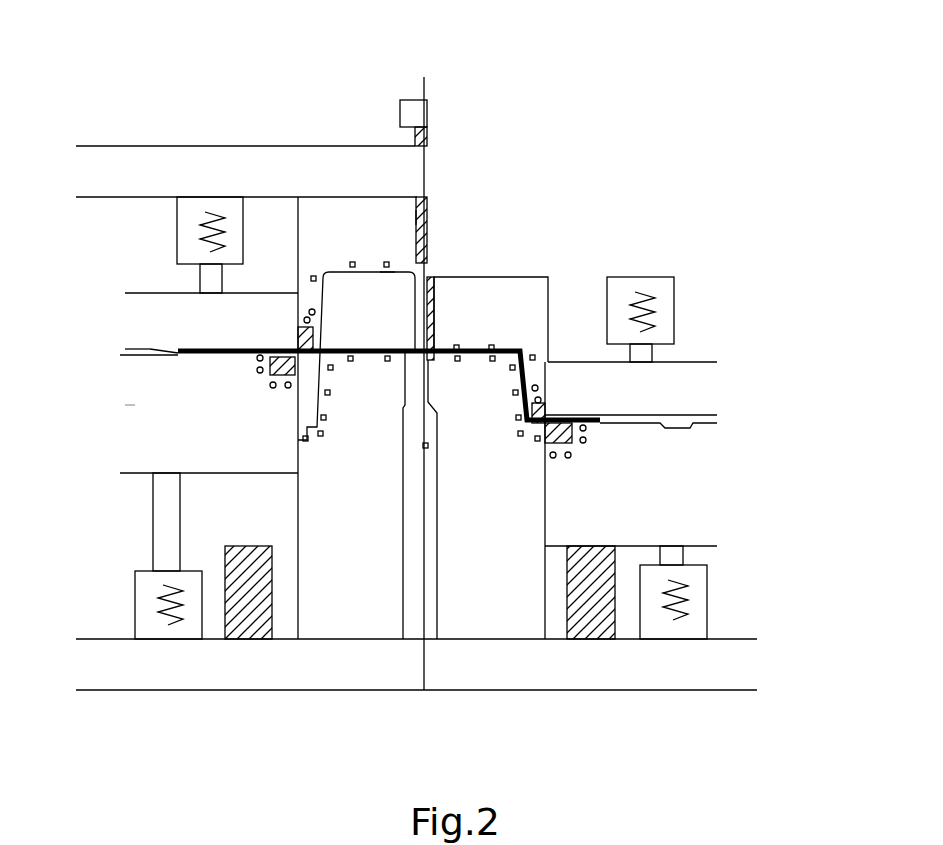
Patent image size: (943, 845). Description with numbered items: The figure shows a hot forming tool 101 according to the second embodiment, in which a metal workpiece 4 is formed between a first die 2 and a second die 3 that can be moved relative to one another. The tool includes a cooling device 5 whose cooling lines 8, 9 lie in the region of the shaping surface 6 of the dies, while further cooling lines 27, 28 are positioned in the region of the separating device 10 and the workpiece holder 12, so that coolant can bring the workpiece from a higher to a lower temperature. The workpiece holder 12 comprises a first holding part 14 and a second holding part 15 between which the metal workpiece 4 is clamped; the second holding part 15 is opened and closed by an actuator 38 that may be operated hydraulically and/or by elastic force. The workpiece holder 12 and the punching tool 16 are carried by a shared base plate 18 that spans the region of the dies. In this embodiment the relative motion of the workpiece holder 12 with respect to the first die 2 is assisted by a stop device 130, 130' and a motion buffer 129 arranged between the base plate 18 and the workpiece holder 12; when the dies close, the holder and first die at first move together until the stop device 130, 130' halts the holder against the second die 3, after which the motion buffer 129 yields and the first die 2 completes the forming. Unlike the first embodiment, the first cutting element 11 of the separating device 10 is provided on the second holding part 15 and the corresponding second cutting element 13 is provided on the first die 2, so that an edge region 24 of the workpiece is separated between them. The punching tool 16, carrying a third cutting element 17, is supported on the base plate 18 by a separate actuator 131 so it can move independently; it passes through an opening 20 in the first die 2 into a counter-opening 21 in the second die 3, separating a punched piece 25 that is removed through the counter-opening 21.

The hot forming tool 101 is at (160, 53).
The base plate 18 is at (113, 163).
The actuator 131 is at (413, 108).
The punching tool 16 is at (385, 138).
The third cutting element 17 is at (415, 210).
The opening 20 is at (413, 217).
The first die 2 is at (312, 205).
The cooling device 5 is at (330, 262).
The motion buffer 129 is at (158, 243).
The separating device 10 is at (190, 332).
The first holding part 14 is at (133, 349).
The workpiece holder 12 is at (115, 358).
The metal workpiece 4 is at (350, 347).
The second cutting element 13 is at (300, 338).
The first cutting element 11 is at (260, 375).
The cooling line 28 is at (258, 360).
The cooling line 27 is at (307, 303).
The cooling line 8 is at (387, 262).
The shaping surface 6 is at (383, 278).
The cooling line 9 is at (350, 364).
The counter-opening 21 is at (407, 406).
The punched piece 25 is at (427, 450).
The edge region 24 is at (598, 423).
The second holding part 15 is at (130, 405).
The second die 3 is at (308, 460).
The actuator 38 is at (127, 607).
The stop device 130 is at (248, 639).
The stop device 130' is at (587, 639).